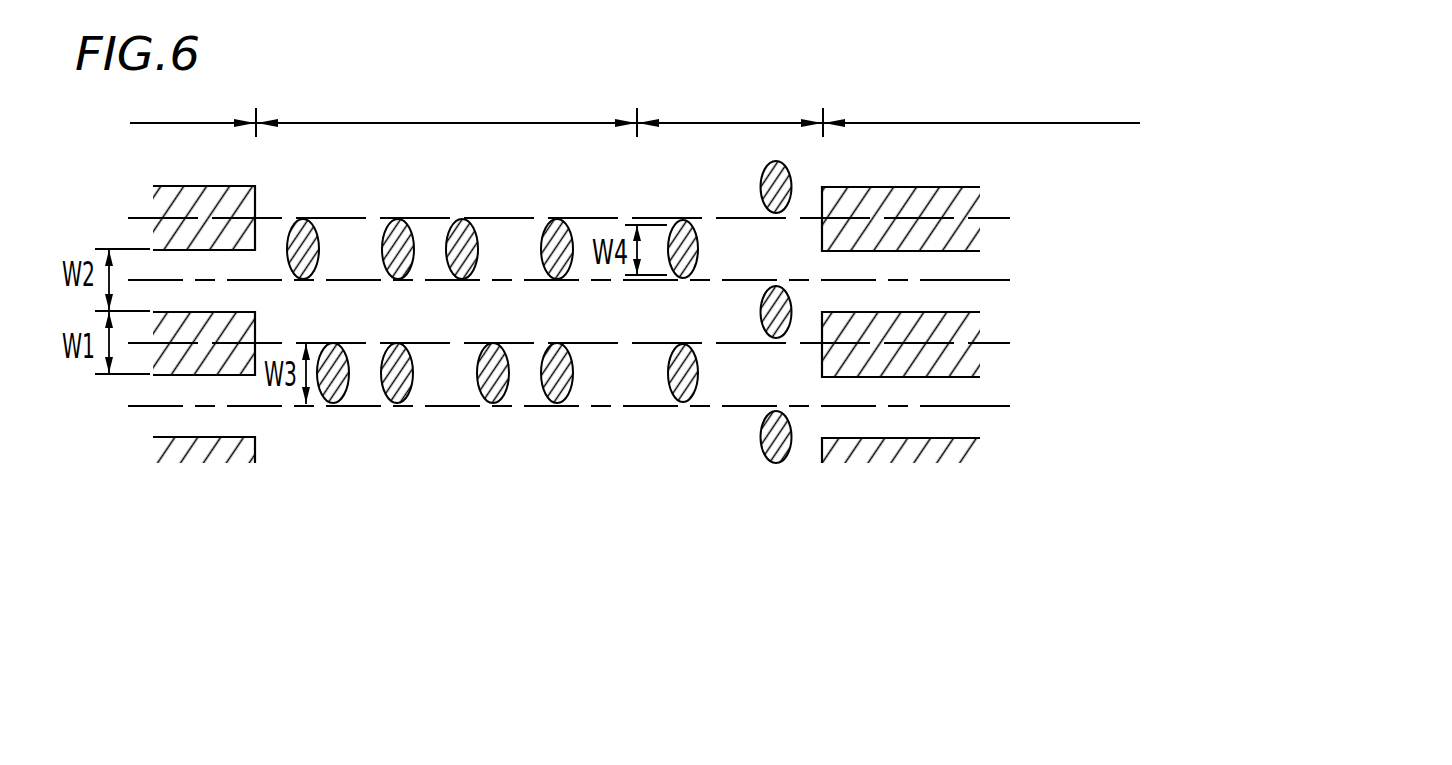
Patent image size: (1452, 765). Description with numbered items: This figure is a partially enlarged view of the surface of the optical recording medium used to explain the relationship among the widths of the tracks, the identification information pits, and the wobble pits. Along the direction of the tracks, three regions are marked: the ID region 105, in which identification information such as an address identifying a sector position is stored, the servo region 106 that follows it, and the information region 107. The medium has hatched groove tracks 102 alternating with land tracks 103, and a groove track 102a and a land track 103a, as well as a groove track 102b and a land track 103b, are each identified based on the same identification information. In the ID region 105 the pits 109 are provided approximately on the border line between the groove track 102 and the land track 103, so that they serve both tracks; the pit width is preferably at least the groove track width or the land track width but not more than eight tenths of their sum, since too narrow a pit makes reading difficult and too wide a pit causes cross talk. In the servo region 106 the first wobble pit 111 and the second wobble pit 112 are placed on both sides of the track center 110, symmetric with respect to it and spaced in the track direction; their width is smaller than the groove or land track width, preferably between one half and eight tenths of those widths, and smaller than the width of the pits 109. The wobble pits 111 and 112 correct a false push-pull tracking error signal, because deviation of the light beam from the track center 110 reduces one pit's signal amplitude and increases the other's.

The ID region 105 is at (383, 108).
The servo region 106 is at (730, 108).
The information region 107 is at (981, 108).
The pits 109 is at (557, 403).
The track center 110 is at (1005, 218).
The first wobble pit 111 is at (683, 279).
The second wobble pit 112 is at (763, 331).
The groove track 102 is at (1178, 228).
The groove track 102a is at (975, 242).
The groove track 102b is at (973, 332).
The land track 103 is at (1340, 295).
The land track 103a is at (975, 295).
The land track 103b is at (968, 425).